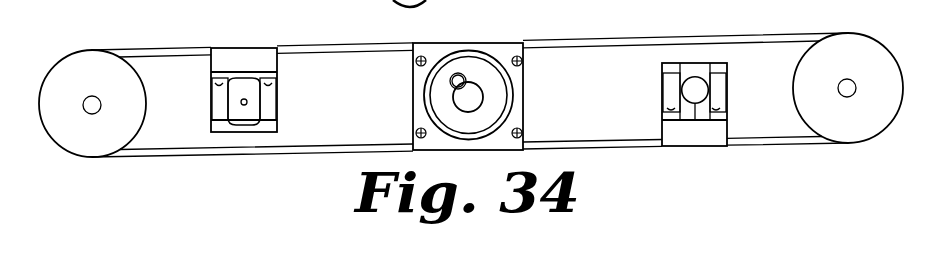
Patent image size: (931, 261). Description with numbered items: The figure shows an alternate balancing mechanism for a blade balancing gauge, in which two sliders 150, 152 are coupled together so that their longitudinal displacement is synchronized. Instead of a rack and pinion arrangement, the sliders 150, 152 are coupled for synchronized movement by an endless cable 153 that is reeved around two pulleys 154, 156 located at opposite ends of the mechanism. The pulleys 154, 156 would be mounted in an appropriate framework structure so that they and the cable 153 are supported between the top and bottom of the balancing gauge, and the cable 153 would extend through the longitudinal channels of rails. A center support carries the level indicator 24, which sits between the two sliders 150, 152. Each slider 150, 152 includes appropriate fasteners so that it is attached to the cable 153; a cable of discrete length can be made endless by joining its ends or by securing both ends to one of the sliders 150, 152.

The level indicator 24 is at (483, 52).
The slider 150 is at (278, 113).
The slider 152 is at (663, 118).
The endless cable 153 is at (279, 158).
The pulley 154 is at (79, 135).
The pulley 156 is at (852, 120).